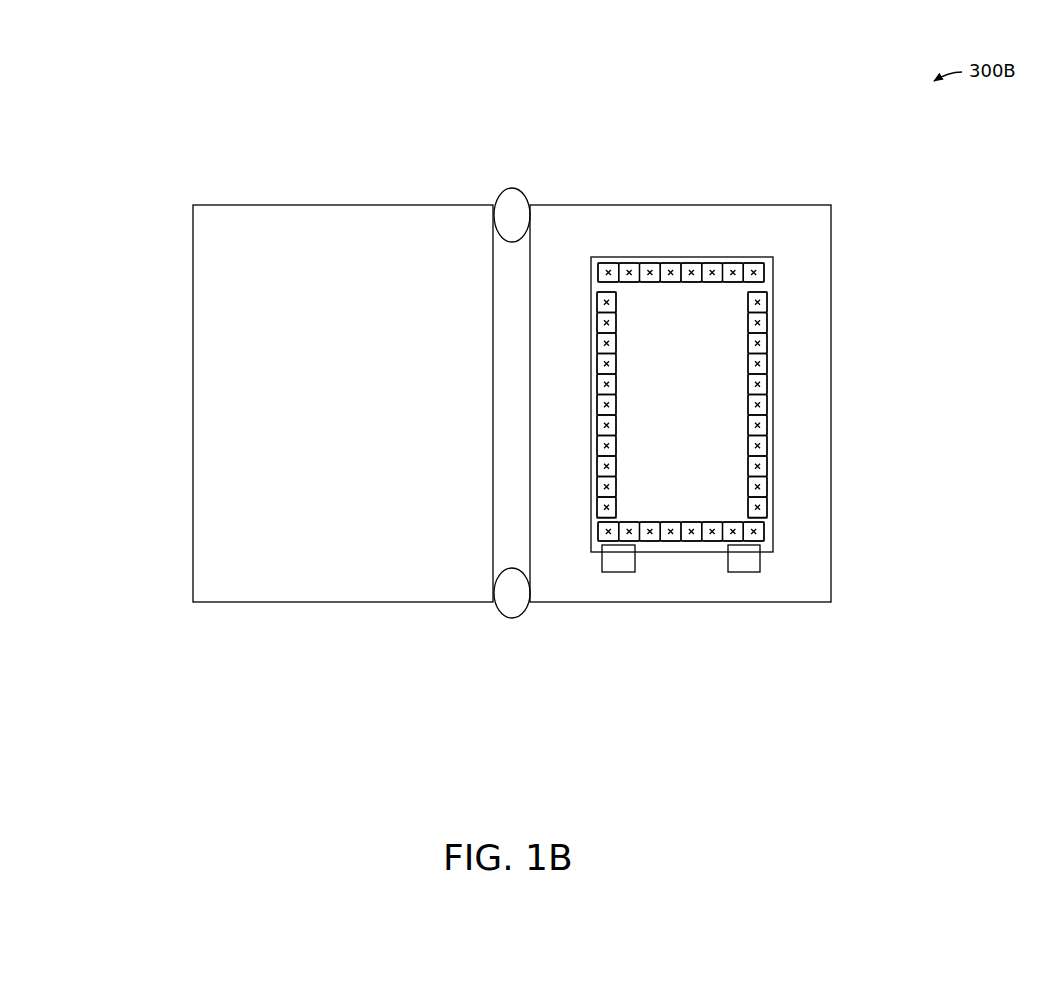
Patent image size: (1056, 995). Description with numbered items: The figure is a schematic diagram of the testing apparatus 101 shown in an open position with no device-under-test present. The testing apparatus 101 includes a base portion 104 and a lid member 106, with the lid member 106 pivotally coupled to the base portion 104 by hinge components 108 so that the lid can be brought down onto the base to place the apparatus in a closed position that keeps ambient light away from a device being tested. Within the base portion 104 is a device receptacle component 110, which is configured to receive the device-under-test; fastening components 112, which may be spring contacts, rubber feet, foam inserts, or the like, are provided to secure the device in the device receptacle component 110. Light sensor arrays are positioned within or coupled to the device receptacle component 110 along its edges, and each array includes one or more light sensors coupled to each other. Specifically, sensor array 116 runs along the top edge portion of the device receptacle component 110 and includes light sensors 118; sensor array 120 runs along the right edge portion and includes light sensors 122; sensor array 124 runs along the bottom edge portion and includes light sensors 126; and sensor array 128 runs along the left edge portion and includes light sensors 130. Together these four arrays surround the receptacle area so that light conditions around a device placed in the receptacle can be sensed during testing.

The testing apparatus 101 is at (283, 602).
The base portion 104 is at (808, 225).
The lid member 106 is at (272, 240).
The hinge component 108 is at (505, 190).
The device receptacle component 110 is at (603, 256).
The fastening component 112 is at (750, 557).
The sensor array 116 is at (699, 196).
The light sensor 118 is at (693, 265).
The sensor array 120 is at (842, 405).
The light sensor 122 is at (760, 438).
The sensor array 124 is at (693, 602).
The light sensor 126 is at (708, 541).
The sensor array 128 is at (565, 493).
The light sensor 130 is at (600, 503).